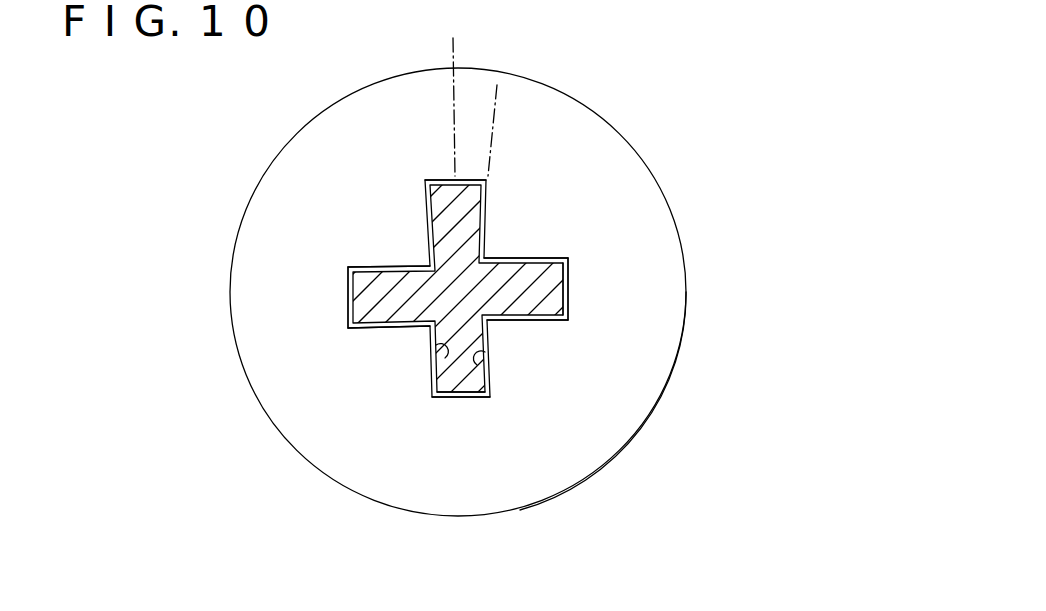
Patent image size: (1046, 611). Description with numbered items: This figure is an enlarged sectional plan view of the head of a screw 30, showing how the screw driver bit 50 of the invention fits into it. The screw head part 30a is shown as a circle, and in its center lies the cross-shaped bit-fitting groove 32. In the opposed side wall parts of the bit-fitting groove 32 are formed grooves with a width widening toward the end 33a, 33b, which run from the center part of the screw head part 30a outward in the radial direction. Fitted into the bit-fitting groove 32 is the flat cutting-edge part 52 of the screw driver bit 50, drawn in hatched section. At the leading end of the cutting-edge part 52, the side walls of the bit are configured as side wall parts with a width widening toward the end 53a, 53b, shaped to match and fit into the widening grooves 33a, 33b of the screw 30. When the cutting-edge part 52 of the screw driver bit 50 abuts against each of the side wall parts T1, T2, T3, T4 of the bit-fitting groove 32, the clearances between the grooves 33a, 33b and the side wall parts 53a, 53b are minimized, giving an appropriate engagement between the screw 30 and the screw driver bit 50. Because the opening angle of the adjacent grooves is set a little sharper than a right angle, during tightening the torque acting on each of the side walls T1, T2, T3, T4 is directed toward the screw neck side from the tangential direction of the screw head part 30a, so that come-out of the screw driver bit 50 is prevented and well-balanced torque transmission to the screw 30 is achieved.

The screw 30 is at (637, 131).
The screw head part 30a is at (600, 435).
The bit-fitting groove 32 is at (396, 262).
The groove with a width widening toward the end 33a is at (558, 322).
The groove with a width widening toward the end 33b is at (543, 262).
The screw driver bit 50 is at (378, 298).
The flat cutting-edge part 52 is at (541, 287).
The side wall part with a width widening toward the end 53a is at (437, 345).
The side wall part with a width widening toward the end 53b is at (490, 352).
The side wall part of bit-fitting groove T1 is at (359, 261).
The side wall part of bit-fitting groove T2 is at (553, 328).
The side wall part of bit-fitting groove T3 is at (490, 191).
The side wall part of bit-fitting groove T4 is at (428, 383).